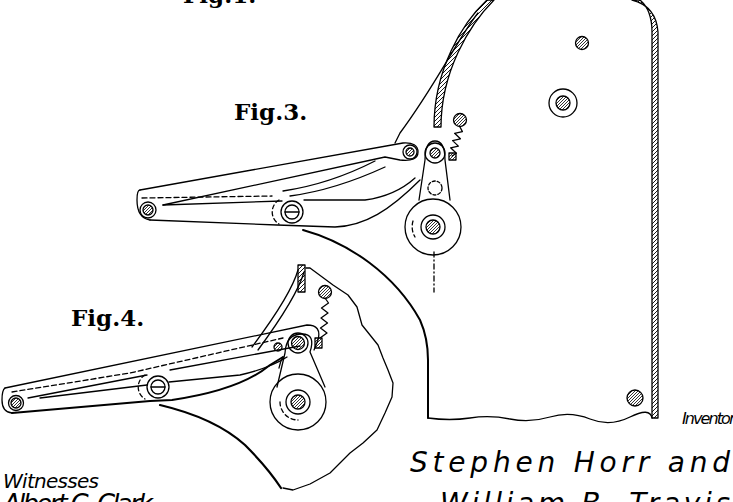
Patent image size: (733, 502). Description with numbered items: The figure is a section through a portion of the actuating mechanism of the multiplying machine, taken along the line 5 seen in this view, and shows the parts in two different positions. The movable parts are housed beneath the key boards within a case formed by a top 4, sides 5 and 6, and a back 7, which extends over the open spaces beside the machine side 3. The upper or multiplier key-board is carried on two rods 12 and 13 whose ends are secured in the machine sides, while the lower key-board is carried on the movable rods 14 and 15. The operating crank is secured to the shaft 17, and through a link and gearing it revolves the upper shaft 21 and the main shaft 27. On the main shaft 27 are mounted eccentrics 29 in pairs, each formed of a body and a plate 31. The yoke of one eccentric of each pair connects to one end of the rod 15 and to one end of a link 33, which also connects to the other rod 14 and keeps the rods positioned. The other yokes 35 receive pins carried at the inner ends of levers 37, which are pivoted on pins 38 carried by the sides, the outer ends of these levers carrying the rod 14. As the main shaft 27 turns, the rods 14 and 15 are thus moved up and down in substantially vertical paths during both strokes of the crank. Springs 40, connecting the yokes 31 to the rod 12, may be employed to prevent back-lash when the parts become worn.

In FIG. 3, the side 3 is at (477, 218).
In FIG. 3, the top 4 is at (458, 30).
In FIG. 3, the side 5 is at (412, 77).
In FIG. 3, the side 6 is at (430, 215).
In FIG. 3, the back 7 is at (662, 146).
In FIG. 3, the rod 12 is at (466, 109).
In FIG. 3, the rod 13 is at (587, 48).
In FIG. 3, the movable rod 14 is at (147, 219).
In FIG. 4, the movable rod 14 is at (22, 411).
In FIG. 3, the movable rod 15 is at (449, 160).
In FIG. 4, the movable rod 15 is at (315, 350).
In FIG. 3, the shaft 17 is at (627, 398).
In FIG. 3, the upper shaft 21 is at (572, 108).
In FIG. 3, the main shaft 27 is at (445, 236).
In FIG. 4, the main shaft 27 is at (310, 410).
In FIG. 3, the eccentric 29 is at (418, 232).
In FIG. 4, the eccentric 29 is at (271, 398).
In FIG. 3, the plate 31 is at (427, 175).
In FIG. 4, the plate 31 is at (302, 373).
In FIG. 3, the link 33 is at (277, 181).
In FIG. 4, the link 33 is at (173, 358).
In FIG. 4, the yoke 35 is at (283, 360).
In FIG. 3, the lever 37 is at (285, 202).
In FIG. 4, the lever 37 is at (149, 385).
In FIG. 3, the pin 38 is at (289, 223).
In FIG. 4, the pin 38 is at (158, 400).
In FIG. 3, the spring 40 is at (464, 137).